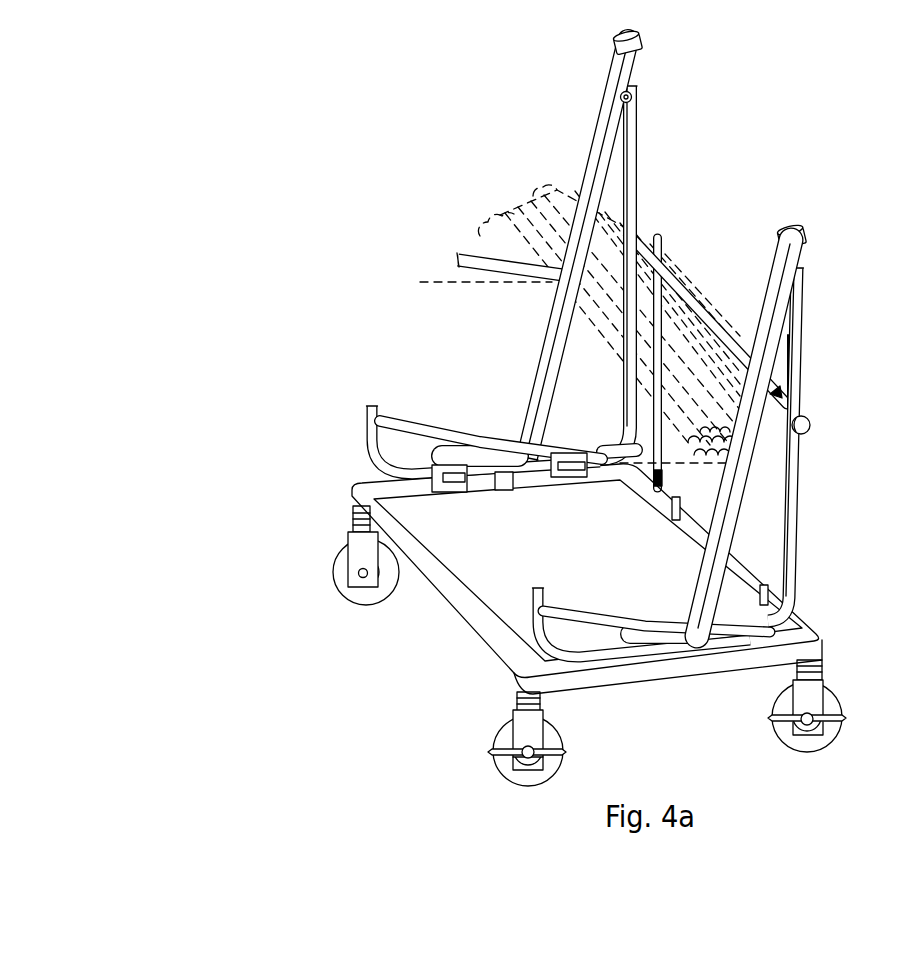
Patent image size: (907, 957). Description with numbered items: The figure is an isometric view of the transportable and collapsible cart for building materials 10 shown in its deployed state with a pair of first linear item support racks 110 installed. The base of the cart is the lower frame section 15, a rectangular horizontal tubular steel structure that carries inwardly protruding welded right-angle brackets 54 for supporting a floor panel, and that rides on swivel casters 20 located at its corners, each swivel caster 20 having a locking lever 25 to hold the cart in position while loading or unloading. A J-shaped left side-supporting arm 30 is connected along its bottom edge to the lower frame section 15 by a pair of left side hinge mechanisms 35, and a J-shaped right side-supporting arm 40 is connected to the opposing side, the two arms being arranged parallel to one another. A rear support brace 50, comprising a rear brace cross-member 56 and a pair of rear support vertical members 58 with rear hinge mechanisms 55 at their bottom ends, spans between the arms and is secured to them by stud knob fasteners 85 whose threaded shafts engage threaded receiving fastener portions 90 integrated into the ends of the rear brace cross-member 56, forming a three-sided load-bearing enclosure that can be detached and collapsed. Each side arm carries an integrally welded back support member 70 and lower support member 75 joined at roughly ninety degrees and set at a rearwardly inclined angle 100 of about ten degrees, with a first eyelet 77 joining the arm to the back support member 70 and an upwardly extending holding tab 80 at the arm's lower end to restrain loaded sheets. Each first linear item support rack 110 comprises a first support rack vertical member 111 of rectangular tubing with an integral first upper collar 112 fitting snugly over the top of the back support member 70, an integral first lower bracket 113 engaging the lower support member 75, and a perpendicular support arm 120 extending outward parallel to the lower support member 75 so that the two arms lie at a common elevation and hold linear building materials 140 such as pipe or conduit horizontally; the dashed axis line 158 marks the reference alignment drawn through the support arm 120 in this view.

The transportable and collapsible cart for building materials 10 is at (182, 146).
The lower frame section 15 is at (458, 606).
The swivel caster 20 is at (356, 591).
The locking lever 25 is at (500, 750).
The left side-supporting arm 30 is at (638, 167).
The left side hinge mechanism 35 is at (566, 465).
The right side-supporting arm 40 is at (800, 353).
The rear support brace 50 is at (722, 278).
The welded right-angle bracket 54 is at (504, 476).
The rear hinge mechanism 55 is at (655, 482).
The rear brace cross-member 56 is at (656, 262).
The rear support vertical member 58 is at (661, 310).
The back support member 70 is at (608, 170).
The lower support member 75 is at (431, 450).
The first eyelet 77 is at (633, 97).
The holding tab 80 is at (371, 426).
The stud knob fastener 85 is at (809, 430).
The threaded receiving fastener portion 90 is at (636, 240).
The rearwardly inclined angle 100 is at (436, 458).
The first linear item support rack 110 is at (546, 336).
The first support rack vertical member 111 is at (610, 118).
The first upper collar 112 is at (643, 55).
The first lower bracket 113 is at (527, 440).
The support arm 120 is at (454, 262).
The linear building materials 140 is at (513, 252).
The axis line 158 is at (552, 277).